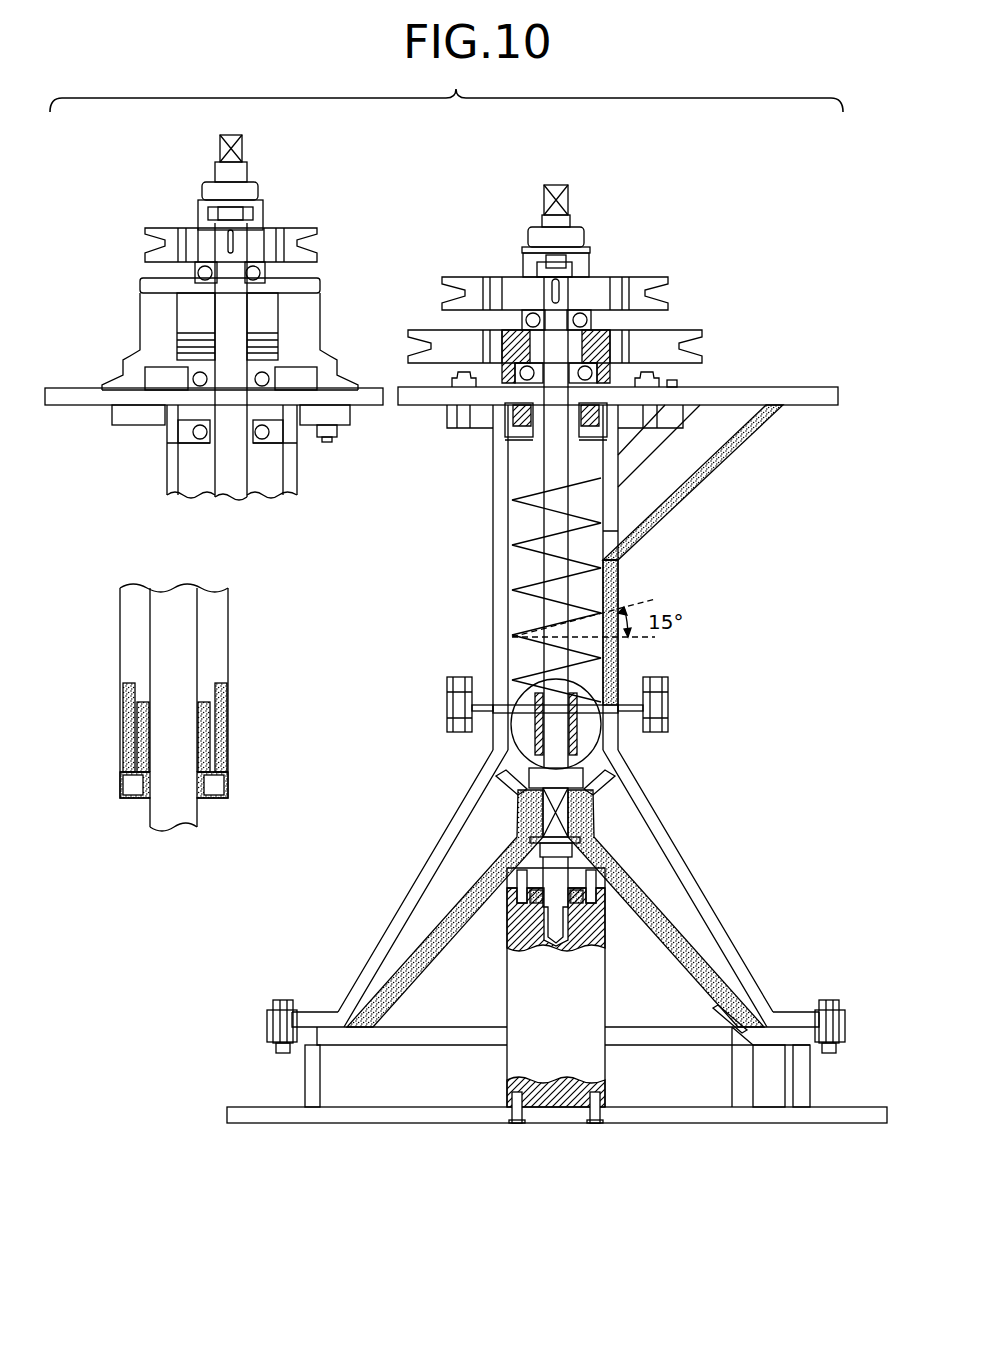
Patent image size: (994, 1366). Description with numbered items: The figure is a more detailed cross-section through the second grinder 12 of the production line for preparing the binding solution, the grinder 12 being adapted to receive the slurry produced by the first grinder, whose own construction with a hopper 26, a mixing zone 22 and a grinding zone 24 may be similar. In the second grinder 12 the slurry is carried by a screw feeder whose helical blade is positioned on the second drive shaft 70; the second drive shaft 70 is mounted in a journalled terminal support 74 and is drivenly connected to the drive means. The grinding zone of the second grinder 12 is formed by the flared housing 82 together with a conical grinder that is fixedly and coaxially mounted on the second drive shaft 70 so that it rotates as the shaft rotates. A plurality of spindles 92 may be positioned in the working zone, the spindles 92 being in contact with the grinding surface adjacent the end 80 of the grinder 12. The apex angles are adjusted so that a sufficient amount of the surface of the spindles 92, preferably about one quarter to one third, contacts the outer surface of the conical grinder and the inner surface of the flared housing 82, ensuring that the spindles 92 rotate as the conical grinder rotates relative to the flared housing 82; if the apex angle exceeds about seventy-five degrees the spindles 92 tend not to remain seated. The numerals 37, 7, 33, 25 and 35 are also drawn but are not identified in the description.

The pulley 37 is at (202, 249).
The hopper 26 is at (188, 292).
The spindle housing 7 is at (193, 323).
The outer damping layer 33 is at (223, 698).
The mixing zone 22 is at (210, 728).
The grinding zone 24 is at (213, 764).
The second grinder 12 is at (487, 552).
The second drive shaft 70 is at (555, 513).
The flared housing 82 is at (623, 773).
The spindles 92 is at (643, 823).
The journalled terminal support 74 is at (515, 928).
The end 80 is at (853, 1016).
The bracket 25 is at (750, 1097).
The bolt 35 is at (515, 1125).